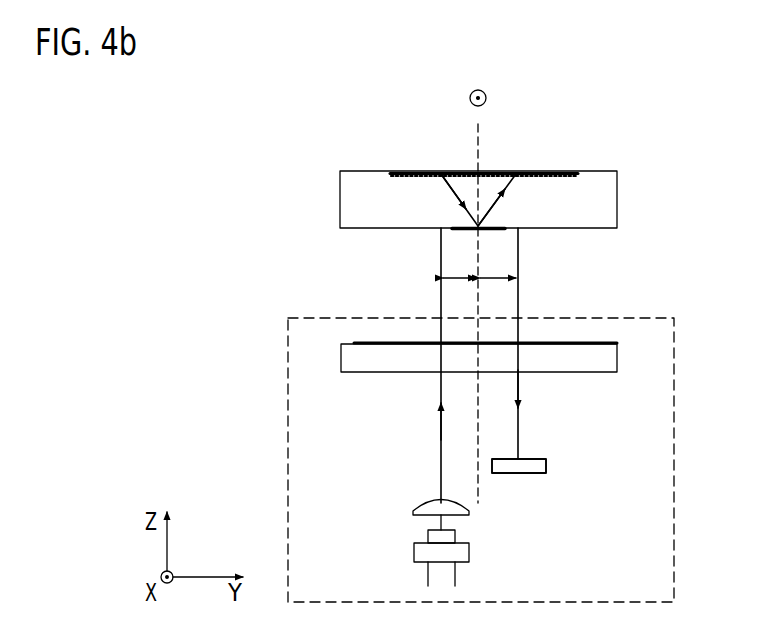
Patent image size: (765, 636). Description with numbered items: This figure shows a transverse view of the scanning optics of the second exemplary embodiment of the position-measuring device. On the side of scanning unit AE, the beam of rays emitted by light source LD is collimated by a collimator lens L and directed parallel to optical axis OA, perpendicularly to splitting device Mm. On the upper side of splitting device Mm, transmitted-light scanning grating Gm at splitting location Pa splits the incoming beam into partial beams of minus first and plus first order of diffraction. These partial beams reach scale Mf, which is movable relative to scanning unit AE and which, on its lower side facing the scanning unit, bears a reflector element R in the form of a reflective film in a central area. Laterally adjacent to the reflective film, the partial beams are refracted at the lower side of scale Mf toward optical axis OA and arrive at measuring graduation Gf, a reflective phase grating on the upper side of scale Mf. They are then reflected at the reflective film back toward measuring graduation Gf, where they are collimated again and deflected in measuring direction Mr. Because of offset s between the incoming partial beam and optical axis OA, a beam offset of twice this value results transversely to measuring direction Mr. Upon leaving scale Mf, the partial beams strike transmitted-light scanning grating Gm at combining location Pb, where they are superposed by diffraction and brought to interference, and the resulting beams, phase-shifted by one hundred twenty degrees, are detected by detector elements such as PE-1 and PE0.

The optical axis OA is at (478, 124).
The measuring direction Mr is at (475, 80).
The scale Mf is at (590, 188).
The measuring graduation Gf is at (478, 172).
The reflector element R is at (502, 229).
The offset s is at (479, 268).
The splitting location Pa is at (440, 343).
The combining location Pb is at (520, 343).
The transmitted-light scanning grating Gm is at (378, 342).
The splitting device Mm is at (360, 364).
The scanning unit AE is at (674, 525).
The detector element PE-1 is at (546, 466).
The detector element PE0 is at (564, 481).
The collimator lens L is at (425, 515).
The light source LD is at (469, 553).